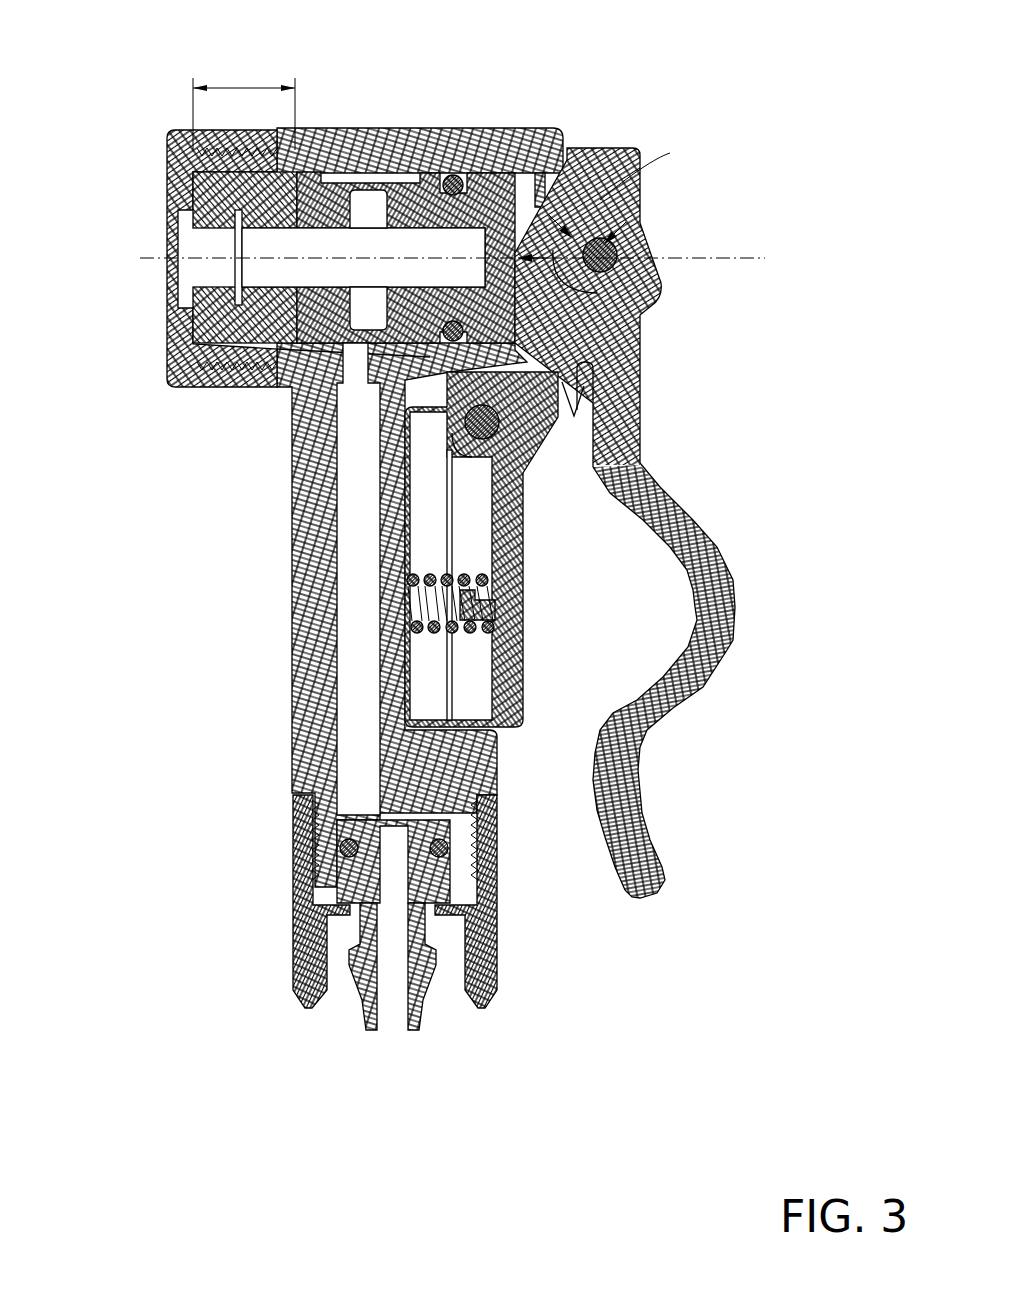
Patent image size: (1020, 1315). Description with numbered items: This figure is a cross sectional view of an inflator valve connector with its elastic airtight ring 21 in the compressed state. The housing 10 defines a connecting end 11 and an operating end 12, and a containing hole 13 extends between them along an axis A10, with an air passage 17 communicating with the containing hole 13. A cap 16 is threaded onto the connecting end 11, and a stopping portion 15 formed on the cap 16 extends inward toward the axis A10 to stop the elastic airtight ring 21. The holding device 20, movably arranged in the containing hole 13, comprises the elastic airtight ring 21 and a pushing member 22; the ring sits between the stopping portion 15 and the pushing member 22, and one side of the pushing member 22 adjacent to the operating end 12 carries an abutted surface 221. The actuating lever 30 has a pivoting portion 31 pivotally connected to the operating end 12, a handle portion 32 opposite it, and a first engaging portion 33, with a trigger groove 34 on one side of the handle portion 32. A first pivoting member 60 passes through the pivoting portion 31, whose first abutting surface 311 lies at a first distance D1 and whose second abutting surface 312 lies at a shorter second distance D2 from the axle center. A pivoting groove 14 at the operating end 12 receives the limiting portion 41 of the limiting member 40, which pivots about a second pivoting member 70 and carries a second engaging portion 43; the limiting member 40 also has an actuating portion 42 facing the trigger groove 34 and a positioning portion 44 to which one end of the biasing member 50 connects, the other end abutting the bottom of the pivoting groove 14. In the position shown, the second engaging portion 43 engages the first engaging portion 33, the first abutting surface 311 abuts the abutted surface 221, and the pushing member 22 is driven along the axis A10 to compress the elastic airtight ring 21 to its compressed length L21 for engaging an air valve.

The housing 10 is at (372, 114).
The connecting end 11 is at (134, 170).
The operating end 12 is at (637, 118).
The containing hole 13 is at (334, 172).
The pivoting groove 14 is at (412, 673).
The stopping portion 15 is at (182, 335).
The cap 16 is at (168, 114).
The air passage 17 is at (340, 727).
The holding device 20 is at (414, 182).
The elastic airtight ring 21 is at (226, 330).
The pushing member 22 is at (460, 177).
The abutted surface 221 is at (517, 178).
The actuating lever 30 is at (668, 352).
The pivoting portion 31 is at (632, 237).
The first abutting surface 311 is at (505, 308).
The second abutting surface 312 is at (577, 147).
The handle portion 32 is at (735, 602).
The first engaging portion 33 is at (595, 378).
The trigger groove 34 is at (688, 568).
The limiting member 40 is at (551, 590).
The limiting portion 41 is at (545, 452).
The actuating portion 42 is at (500, 630).
The second engaging portion 43 is at (582, 398).
The positioning portion 44 is at (472, 590).
The biasing member 50 is at (469, 651).
The first pivoting member 60 is at (612, 243).
The second pivoting member 70 is at (490, 438).
The axis A10 is at (688, 258).
The first distance D1 is at (662, 292).
The second distance D2 is at (629, 192).
The compressed length L21 is at (244, 103).